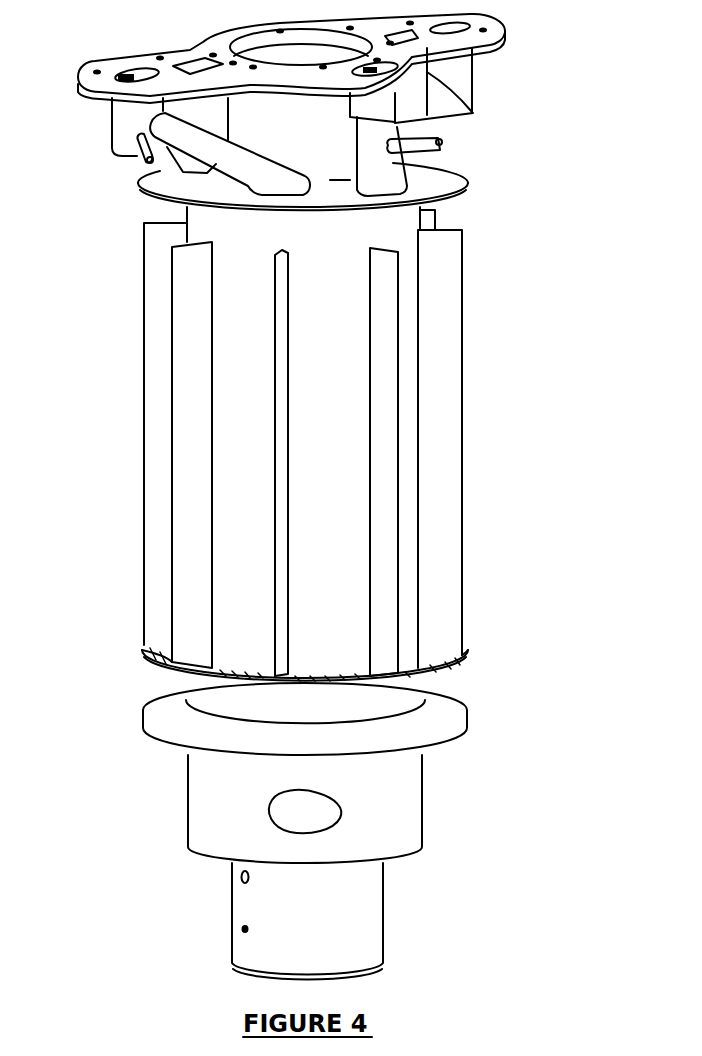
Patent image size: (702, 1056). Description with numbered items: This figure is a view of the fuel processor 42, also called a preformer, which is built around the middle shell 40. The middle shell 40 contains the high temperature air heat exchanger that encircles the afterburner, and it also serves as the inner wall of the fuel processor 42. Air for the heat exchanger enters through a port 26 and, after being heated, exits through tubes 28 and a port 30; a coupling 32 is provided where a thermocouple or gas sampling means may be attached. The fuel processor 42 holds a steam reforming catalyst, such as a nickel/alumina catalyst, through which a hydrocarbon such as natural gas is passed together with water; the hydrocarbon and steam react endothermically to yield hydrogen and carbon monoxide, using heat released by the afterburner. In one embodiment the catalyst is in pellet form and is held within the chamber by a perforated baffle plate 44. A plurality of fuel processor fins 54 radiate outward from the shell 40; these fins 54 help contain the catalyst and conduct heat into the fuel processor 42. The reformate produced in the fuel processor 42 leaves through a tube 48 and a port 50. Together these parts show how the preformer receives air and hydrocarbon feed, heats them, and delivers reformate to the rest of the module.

The port 26 is at (276, 812).
The tubes 28 is at (236, 164).
The port 30 is at (125, 85).
The coupling 32 is at (133, 162).
The middle shell 40 is at (344, 432).
The fuel processor 42 is at (311, 449).
The perforated baffle plate 44 is at (458, 657).
The tube 48 is at (390, 186).
The port 50 is at (430, 78).
The fuel processor fins 54 is at (157, 495).